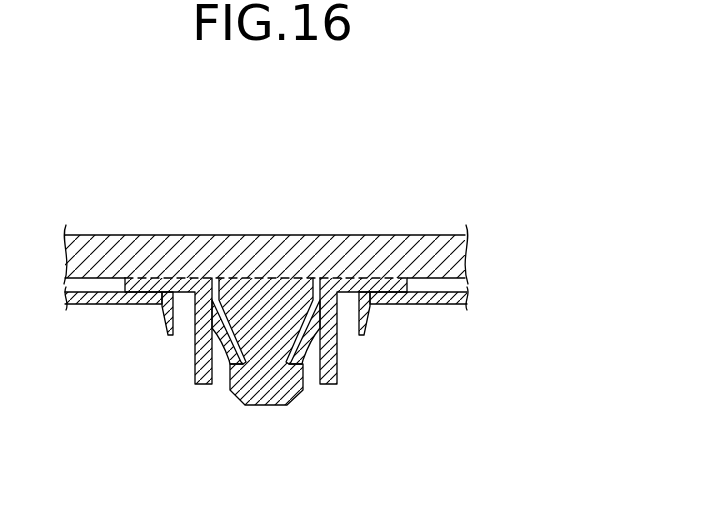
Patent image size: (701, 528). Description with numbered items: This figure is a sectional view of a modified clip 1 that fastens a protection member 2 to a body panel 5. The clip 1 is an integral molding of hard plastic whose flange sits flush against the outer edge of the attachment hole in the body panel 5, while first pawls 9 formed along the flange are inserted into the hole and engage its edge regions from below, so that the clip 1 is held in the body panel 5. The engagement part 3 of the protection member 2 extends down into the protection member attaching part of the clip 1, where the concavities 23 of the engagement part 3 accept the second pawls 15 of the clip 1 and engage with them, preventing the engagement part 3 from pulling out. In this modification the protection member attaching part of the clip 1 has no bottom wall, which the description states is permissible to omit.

The clip 1 is at (186, 348).
The protection member 2 is at (100, 250).
The engagement part 3 is at (291, 268).
The body panel 5 is at (69, 306).
The first pawls 9 is at (162, 313).
The second pawls 15 is at (228, 364).
The concavities 23 is at (305, 382).